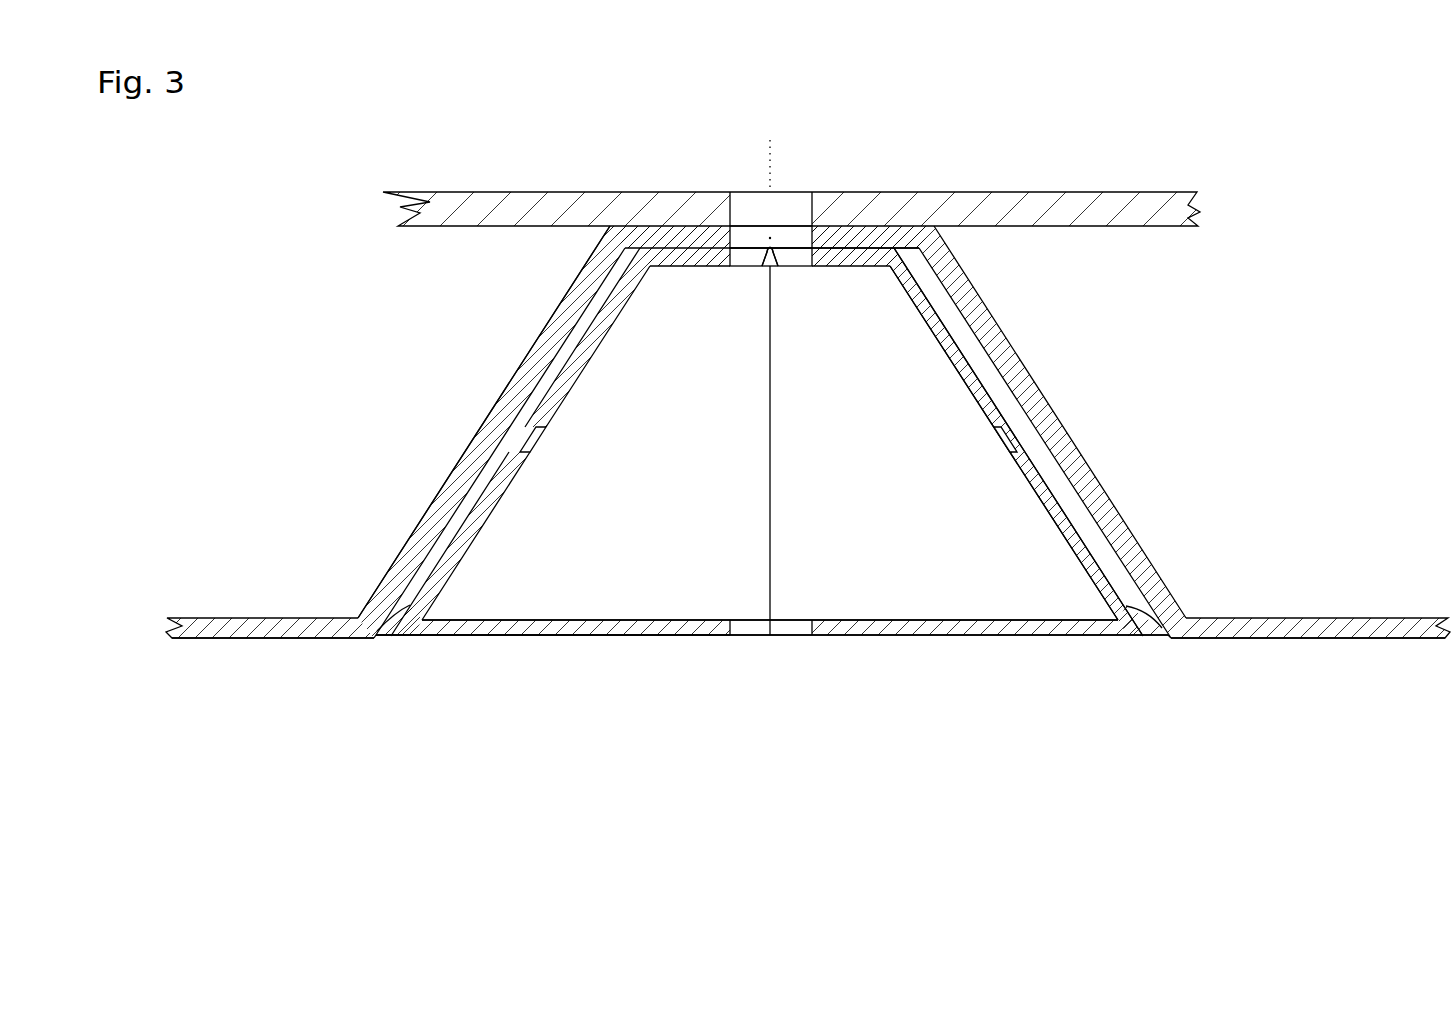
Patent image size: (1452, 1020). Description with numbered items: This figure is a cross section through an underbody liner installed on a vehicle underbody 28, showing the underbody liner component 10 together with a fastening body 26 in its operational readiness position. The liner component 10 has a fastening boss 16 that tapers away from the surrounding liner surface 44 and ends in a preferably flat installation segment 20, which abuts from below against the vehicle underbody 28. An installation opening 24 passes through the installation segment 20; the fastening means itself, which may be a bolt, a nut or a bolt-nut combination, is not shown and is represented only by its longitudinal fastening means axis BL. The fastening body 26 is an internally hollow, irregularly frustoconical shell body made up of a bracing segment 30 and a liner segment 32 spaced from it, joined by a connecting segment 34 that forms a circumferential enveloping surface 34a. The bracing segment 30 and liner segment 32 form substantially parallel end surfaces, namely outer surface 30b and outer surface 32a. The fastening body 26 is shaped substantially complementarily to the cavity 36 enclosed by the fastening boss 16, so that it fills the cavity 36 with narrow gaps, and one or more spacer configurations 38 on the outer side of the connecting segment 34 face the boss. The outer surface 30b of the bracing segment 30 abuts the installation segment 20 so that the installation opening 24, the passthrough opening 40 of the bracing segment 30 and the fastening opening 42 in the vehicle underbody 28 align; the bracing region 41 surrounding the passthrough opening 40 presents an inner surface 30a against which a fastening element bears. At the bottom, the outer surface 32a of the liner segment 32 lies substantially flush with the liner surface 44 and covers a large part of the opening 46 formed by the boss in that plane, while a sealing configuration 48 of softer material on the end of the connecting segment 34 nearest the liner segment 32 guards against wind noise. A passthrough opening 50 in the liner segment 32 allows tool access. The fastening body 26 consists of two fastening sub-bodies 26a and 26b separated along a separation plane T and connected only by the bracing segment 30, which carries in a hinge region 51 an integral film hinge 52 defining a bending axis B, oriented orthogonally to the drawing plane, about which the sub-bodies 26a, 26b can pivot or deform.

The underbody liner component 10 is at (275, 368).
The fastening boss 16 is at (428, 427).
The installation segment 20 is at (647, 234).
The installation opening 24 is at (727, 240).
The fastening body 26 is at (754, 707).
The fastening sub-body 26a is at (528, 687).
The fastening sub-body 26b is at (1048, 679).
The vehicle underbody 28 is at (1013, 204).
The bracing segment 30 is at (695, 258).
The inner surface 30a is at (867, 267).
The outer surface 30b is at (852, 247).
The liner segment 32 is at (614, 620).
The outer surface 32a is at (614, 648).
The connecting segment 34 is at (582, 370).
The enveloping surface 34a is at (466, 522).
The cavity 36 is at (858, 532).
The spacer configuration 38 is at (506, 432).
The passthrough opening 40 is at (800, 268).
The bracing region 41 is at (867, 267).
The fastening opening 42 is at (743, 190).
The liner surface 44 is at (252, 653).
The opening 46 is at (973, 659).
The sealing configuration 48 is at (390, 632).
The passthrough opening 50 is at (795, 637).
The hinge region 51 is at (768, 260).
The film hinge 52 is at (768, 260).
The bending axis B is at (773, 263).
The longitudinal fastening means axis BL is at (775, 180).
The separation plane T is at (777, 460).